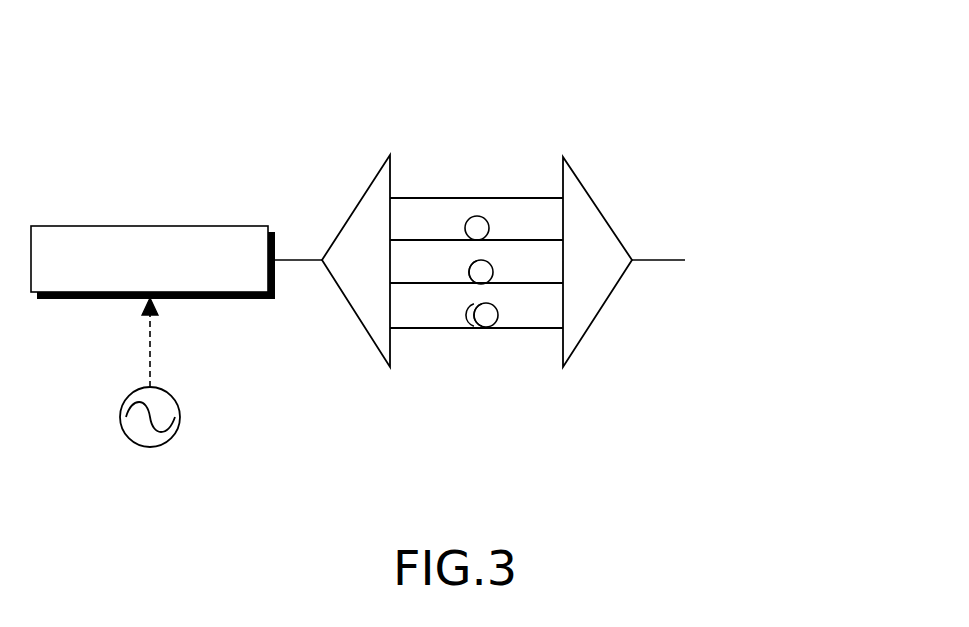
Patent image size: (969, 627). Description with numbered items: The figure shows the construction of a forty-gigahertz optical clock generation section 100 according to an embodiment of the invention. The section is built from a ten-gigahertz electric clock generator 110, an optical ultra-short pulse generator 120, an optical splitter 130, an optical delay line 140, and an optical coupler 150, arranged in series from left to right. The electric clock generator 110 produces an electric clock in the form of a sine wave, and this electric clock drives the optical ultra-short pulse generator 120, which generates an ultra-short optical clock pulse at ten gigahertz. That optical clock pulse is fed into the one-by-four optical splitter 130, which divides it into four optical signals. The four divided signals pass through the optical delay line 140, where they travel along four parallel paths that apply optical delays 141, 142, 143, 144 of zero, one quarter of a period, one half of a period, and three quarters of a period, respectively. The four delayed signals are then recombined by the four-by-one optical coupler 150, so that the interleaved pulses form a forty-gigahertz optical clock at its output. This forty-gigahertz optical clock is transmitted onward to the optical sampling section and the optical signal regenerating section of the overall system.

The optical clock generation section 100 is at (142, 110).
The 10-GHz electric clock generator 110 is at (180, 415).
The optical ultra-short pulse generator 120 is at (200, 225).
The optical splitter 130 is at (357, 207).
The optical delay line 140 is at (473, 147).
The optical delay 141 is at (476, 197).
The optical delay 142 is at (490, 228).
The optical delay 143 is at (494, 272).
The optical delay 144 is at (499, 315).
The optical coupler 150 is at (598, 207).